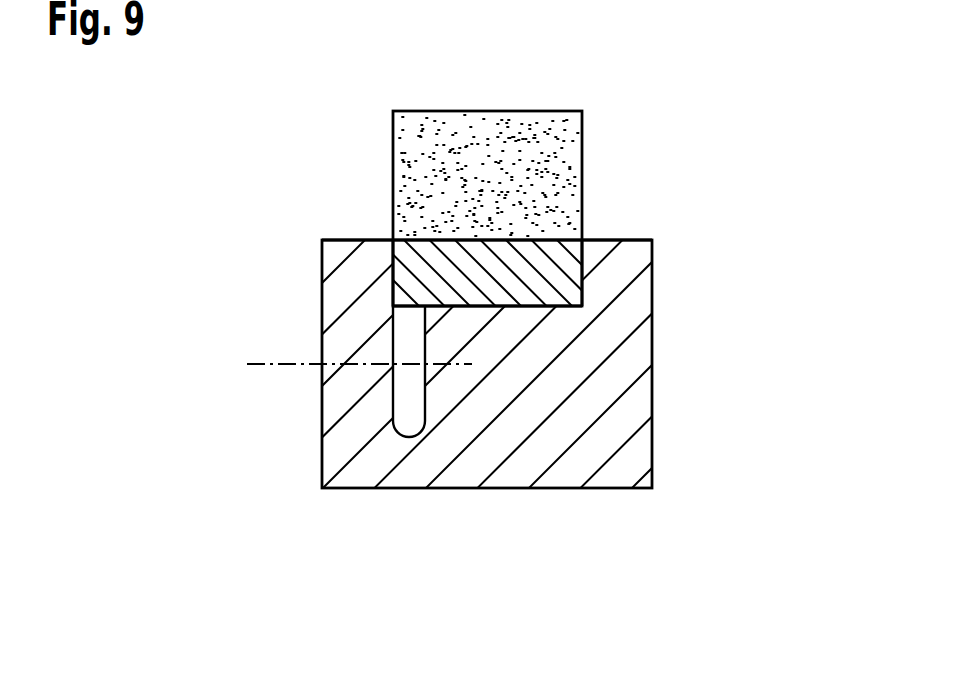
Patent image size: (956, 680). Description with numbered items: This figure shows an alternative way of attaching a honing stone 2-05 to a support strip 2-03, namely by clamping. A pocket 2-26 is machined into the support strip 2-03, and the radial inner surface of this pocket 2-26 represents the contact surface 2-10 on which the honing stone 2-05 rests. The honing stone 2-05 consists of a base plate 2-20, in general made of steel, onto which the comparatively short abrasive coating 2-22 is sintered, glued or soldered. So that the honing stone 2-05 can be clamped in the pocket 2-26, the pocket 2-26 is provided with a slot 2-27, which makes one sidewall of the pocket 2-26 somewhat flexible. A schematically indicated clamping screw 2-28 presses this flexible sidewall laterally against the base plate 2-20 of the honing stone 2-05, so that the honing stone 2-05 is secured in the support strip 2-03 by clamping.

The honing stone 2-05 is at (693, 80).
The support strip 2-03 is at (512, 305).
The contact surface 2-10 is at (495, 290).
The base plate 2-20 is at (553, 272).
The abrasive coating 2-22 is at (545, 172).
The pocket 2-26 is at (395, 264).
The slot 2-27 is at (407, 402).
The clamping screw 2-28 is at (282, 363).